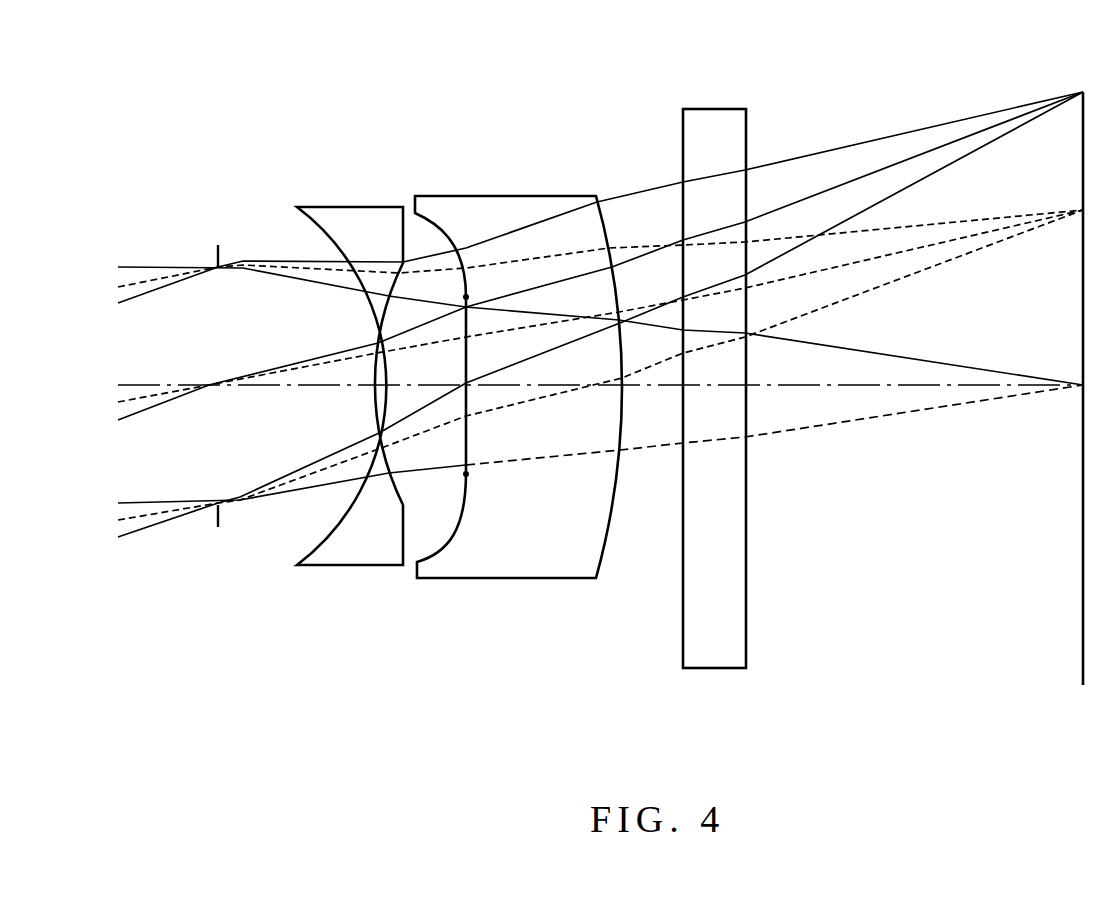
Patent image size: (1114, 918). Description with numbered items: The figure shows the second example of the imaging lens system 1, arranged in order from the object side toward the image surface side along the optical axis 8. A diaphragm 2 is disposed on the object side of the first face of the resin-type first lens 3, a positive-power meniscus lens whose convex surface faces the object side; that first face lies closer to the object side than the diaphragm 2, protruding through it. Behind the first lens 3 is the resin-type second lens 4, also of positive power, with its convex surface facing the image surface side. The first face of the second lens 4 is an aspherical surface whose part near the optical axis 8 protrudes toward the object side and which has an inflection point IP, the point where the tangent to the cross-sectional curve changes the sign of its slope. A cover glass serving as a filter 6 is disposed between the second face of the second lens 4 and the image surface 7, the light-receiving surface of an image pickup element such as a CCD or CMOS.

The imaging lens system 1 is at (110, 133).
The diaphragm 2 is at (218, 247).
The first lens 3 is at (323, 207).
The second lens 4 is at (483, 196).
The filter 6 is at (682, 123).
The image surface 7 is at (1083, 170).
The optical axis 8 is at (131, 383).
The inflection point IP is at (465, 297).